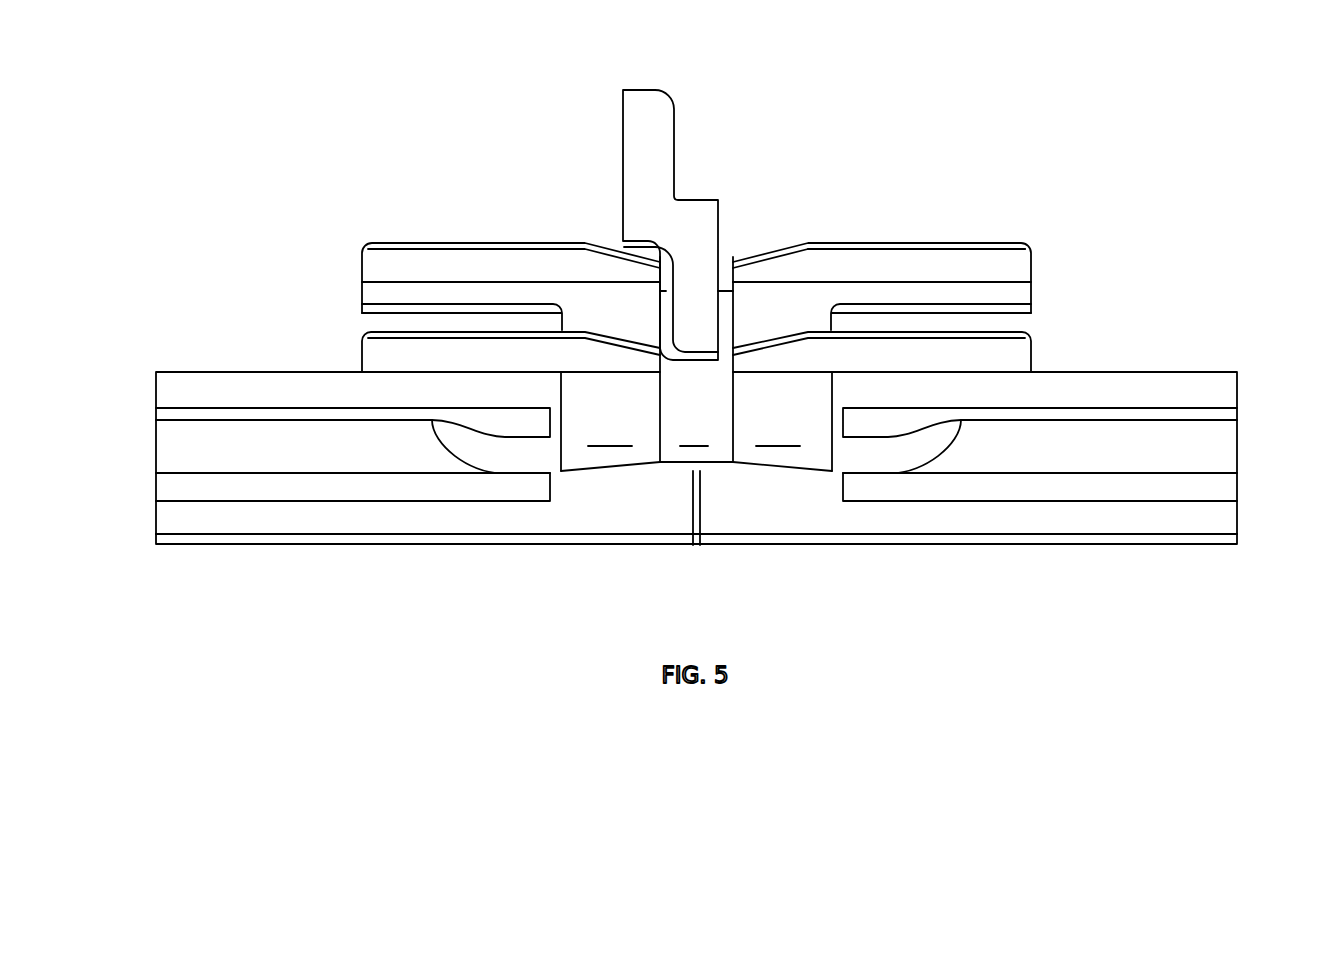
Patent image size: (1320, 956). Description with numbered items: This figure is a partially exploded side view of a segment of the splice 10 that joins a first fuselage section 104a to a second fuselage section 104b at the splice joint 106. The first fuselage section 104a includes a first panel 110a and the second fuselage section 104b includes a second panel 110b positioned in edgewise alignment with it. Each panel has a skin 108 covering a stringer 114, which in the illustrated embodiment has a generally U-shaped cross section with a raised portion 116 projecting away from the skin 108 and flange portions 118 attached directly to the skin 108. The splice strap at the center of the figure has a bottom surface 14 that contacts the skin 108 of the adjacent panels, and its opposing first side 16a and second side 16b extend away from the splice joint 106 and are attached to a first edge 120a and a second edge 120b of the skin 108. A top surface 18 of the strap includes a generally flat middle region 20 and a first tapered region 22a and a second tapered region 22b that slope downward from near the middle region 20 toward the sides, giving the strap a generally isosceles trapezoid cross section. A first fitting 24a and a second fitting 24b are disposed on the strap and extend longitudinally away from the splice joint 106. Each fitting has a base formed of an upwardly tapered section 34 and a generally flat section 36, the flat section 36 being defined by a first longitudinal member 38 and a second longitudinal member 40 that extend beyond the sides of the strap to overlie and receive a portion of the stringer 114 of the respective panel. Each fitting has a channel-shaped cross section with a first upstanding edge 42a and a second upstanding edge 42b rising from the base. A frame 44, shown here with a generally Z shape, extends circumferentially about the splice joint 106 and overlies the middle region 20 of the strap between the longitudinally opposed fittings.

The splice 10 is at (694, 334).
The bottom surface 14 is at (727, 475).
The first side 16a is at (815, 475).
The second side 16b is at (570, 475).
The top surface 18 is at (715, 387).
The middle region 20 is at (693, 432).
The first tapered region 22a is at (778, 432).
The second tapered region 22b is at (610, 432).
The first fitting 24a is at (1031, 254).
The second fitting 24b is at (362, 250).
The upwardly tapered section 34 is at (602, 292).
The flat section 36 is at (468, 257).
The first longitudinal member 38 is at (362, 292).
The second longitudinal member 40 is at (362, 353).
The first upstanding edge 42a is at (865, 243).
The second upstanding edge 42b is at (458, 352).
The frame 44 is at (675, 140).
The first fuselage section 104a is at (1024, 283).
The second fuselage section 104b is at (373, 281).
The splice joint 106 is at (695, 542).
The skin 108 is at (378, 520).
The first panel 110a is at (1237, 530).
The second panel 110b is at (156, 530).
The stringer 114 is at (167, 447).
The raised portion 116 is at (287, 430).
The flange portion 118 is at (298, 490).
The first edge 120a is at (700, 547).
The second edge 120b is at (693, 547).